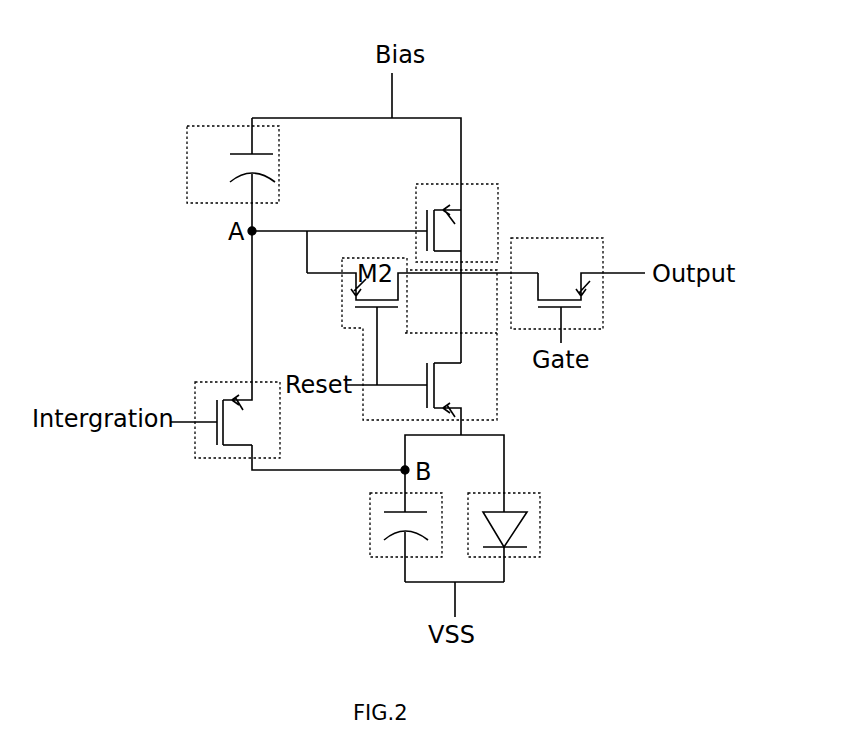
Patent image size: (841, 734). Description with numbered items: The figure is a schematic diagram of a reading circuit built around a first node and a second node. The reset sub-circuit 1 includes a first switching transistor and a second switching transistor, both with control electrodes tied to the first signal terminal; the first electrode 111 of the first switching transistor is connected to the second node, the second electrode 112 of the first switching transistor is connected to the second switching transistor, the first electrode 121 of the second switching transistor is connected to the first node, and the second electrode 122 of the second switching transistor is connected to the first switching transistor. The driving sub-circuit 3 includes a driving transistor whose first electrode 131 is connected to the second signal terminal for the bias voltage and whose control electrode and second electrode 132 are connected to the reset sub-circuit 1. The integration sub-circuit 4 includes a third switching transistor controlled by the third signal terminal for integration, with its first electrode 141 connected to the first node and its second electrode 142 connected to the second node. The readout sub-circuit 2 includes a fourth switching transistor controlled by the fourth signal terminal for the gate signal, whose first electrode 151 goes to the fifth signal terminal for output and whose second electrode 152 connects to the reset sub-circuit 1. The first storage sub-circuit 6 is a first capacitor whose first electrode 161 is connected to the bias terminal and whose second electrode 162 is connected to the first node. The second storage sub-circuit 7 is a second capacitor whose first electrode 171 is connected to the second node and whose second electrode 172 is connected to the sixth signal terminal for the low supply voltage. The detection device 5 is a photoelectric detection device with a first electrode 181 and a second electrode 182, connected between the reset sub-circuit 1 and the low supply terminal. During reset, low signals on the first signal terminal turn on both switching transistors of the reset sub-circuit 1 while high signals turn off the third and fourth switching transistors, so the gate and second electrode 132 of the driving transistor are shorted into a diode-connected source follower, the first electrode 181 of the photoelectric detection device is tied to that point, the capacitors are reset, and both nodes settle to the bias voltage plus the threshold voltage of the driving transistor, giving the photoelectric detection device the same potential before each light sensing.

The reset sub-circuit 1 is at (495, 387).
The first electrode of the first switching transistor 111 is at (500, 407).
The second electrode of the first switching transistor 112 is at (465, 351).
The first electrode of the second switching transistor 121 is at (342, 286).
The second electrode of the second switching transistor 122 is at (457, 286).
The driving sub-circuit 3 is at (488, 203).
The first electrode of the driving transistor 131 is at (463, 206).
The second electrode of the driving transistor 132 is at (464, 252).
The integration sub-circuit 4 is at (213, 345).
The first electrode of the third switching transistor 141 is at (252, 320).
The second electrode of the third switching transistor 142 is at (252, 450).
The readout sub-circuit 2 is at (584, 267).
The first electrode of the fourth switching transistor 151 is at (567, 238).
The second electrode of the fourth switching transistor 152 is at (537, 274).
The first storage sub-circuit 6 is at (209, 157).
The first electrode of the first capacitor 161 is at (245, 136).
The second electrode of the first capacitor 162 is at (246, 202).
The second storage sub-circuit 7 is at (362, 535).
The first electrode of the second capacitor 171 is at (411, 507).
The second electrode of the second capacitor 172 is at (411, 556).
The detection device 5 is at (543, 520).
The first electrode of the photoelectric detection device 181 is at (509, 508).
The second electrode of the photoelectric detection device 182 is at (511, 564).